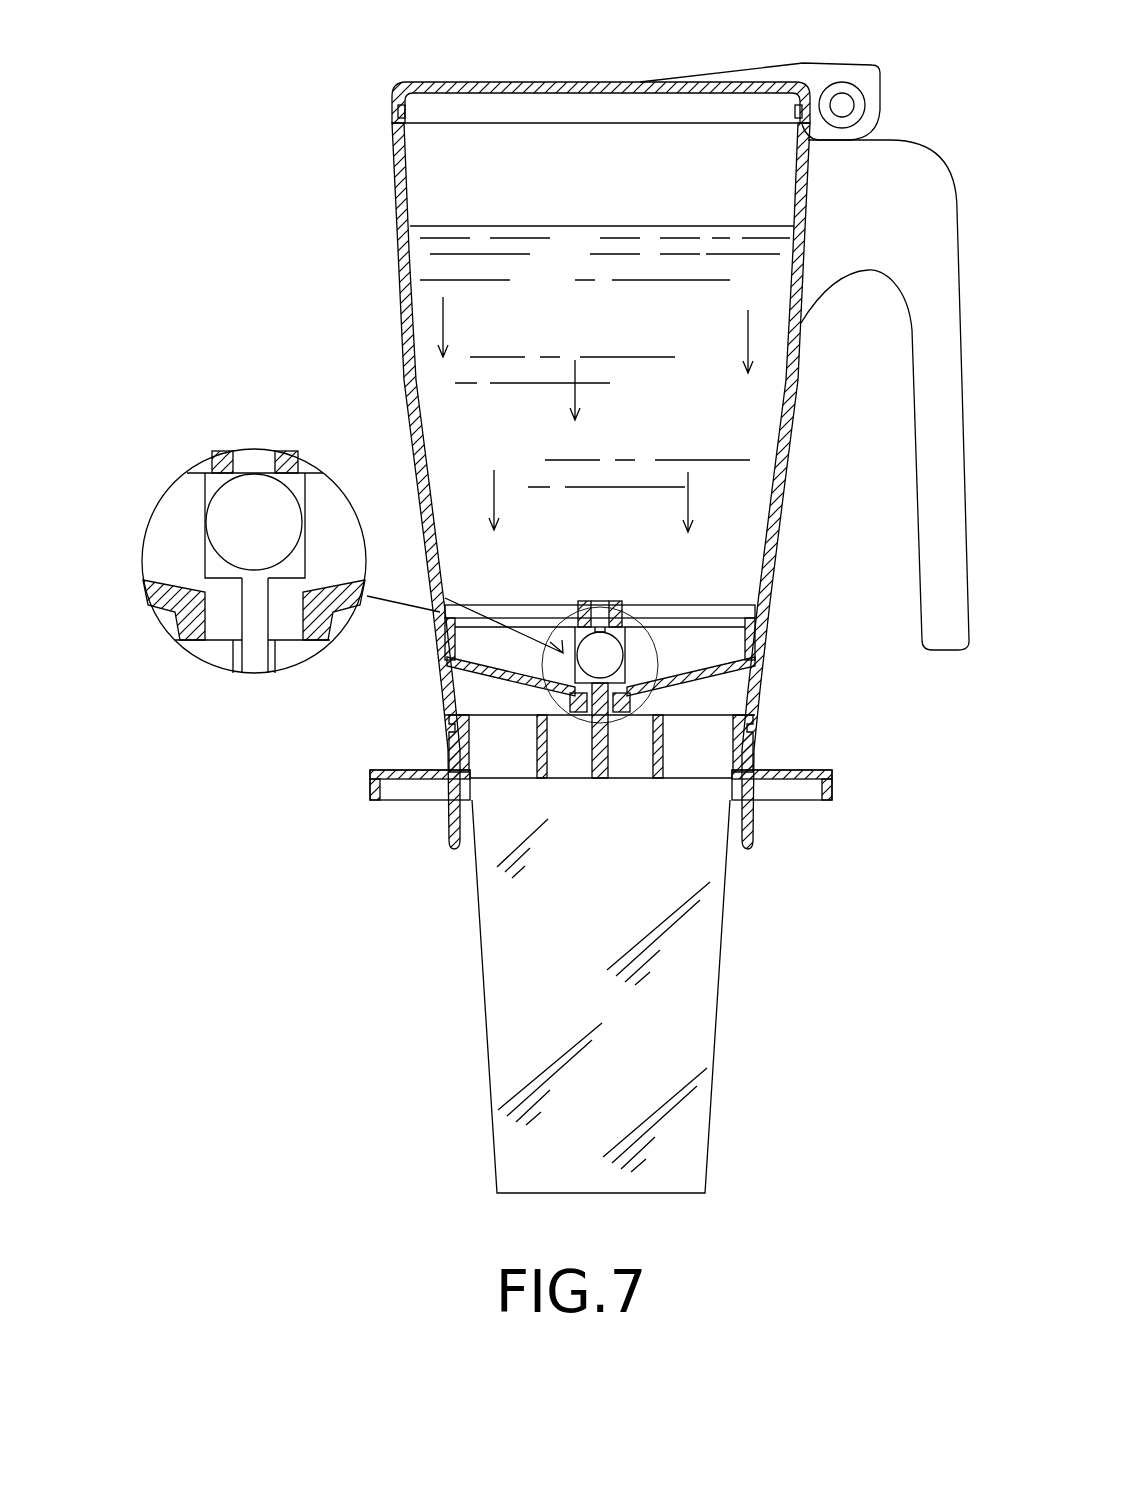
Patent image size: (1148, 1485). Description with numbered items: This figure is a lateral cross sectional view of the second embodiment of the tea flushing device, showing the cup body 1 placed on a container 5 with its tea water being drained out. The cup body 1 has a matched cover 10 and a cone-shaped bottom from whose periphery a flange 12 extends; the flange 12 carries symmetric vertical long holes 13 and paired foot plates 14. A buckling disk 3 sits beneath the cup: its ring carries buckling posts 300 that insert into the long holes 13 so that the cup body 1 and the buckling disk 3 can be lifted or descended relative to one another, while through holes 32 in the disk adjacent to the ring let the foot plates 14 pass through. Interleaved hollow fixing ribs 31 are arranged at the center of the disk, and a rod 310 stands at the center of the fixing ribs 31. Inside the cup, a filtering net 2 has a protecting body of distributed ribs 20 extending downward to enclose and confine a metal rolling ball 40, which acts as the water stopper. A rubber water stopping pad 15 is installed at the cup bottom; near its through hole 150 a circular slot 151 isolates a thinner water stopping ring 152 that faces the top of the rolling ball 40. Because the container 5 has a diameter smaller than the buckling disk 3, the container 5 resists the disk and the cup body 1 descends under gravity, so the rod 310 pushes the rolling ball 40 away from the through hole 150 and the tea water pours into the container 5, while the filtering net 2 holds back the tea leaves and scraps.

The cup body 1 is at (400, 397).
The cover 10 is at (475, 88).
The filtering net 2 is at (640, 613).
The ribs 20 is at (490, 640).
The rolling ball 40 is at (592, 648).
The water stopping pad 15 is at (573, 690).
The through hole 150 is at (232, 637).
The circular slot 151 is at (200, 600).
The water stopping ring 152 is at (223, 592).
The rod 310 is at (622, 690).
The fixing ribs 31 is at (573, 770).
The buckling posts 300 is at (452, 720).
The long holes 13 is at (455, 735).
The flange 12 is at (470, 747).
The foot plates 14 is at (450, 830).
The buckling disk 3 is at (832, 787).
The through holes 32 is at (440, 767).
The container 5 is at (707, 992).